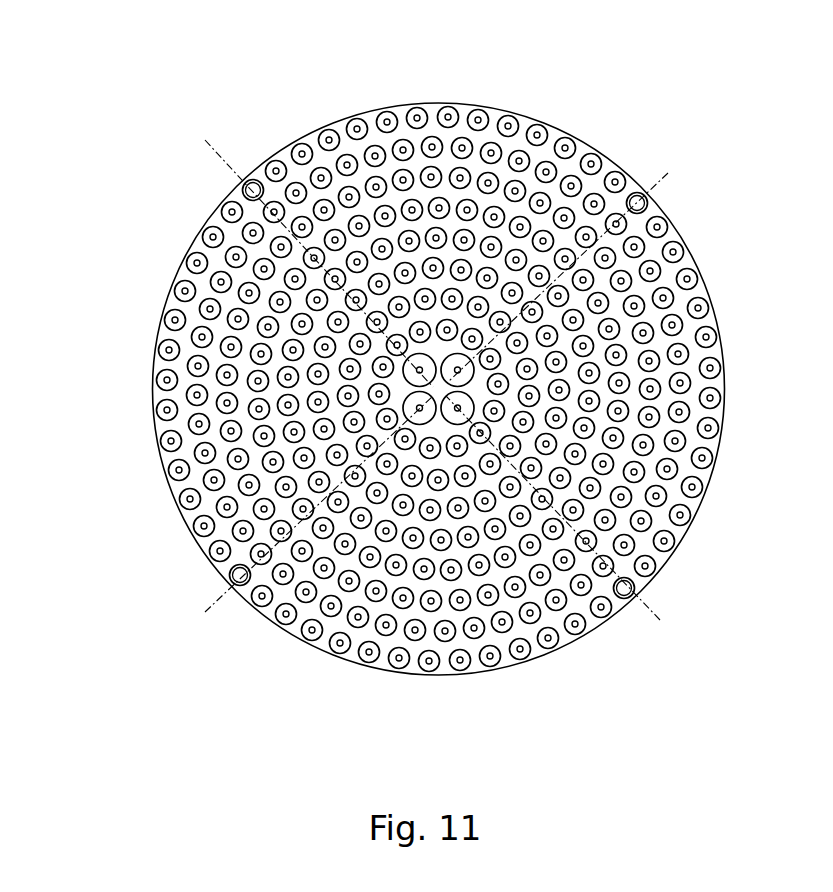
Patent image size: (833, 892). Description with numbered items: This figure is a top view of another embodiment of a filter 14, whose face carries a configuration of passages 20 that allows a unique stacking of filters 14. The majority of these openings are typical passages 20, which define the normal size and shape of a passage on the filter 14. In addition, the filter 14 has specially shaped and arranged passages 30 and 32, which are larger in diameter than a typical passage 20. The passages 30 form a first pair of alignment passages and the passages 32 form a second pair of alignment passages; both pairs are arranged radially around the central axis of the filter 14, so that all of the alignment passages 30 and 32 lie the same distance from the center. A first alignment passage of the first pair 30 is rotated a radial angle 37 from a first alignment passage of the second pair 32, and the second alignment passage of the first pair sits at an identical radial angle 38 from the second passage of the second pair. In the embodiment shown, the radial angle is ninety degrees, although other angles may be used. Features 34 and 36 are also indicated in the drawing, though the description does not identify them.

The filter 14 is at (260, 68).
The passages 20 is at (420, 105).
The first pair of alignment passages 30 is at (122, 487).
The second pair of alignment passages 32 is at (288, 498).
The upper tie rod holes 34 is at (676, 164).
The lower tie rod holes 36 is at (662, 622).
The radial angle 37 is at (636, 429).
The radial angle 38 is at (240, 398).